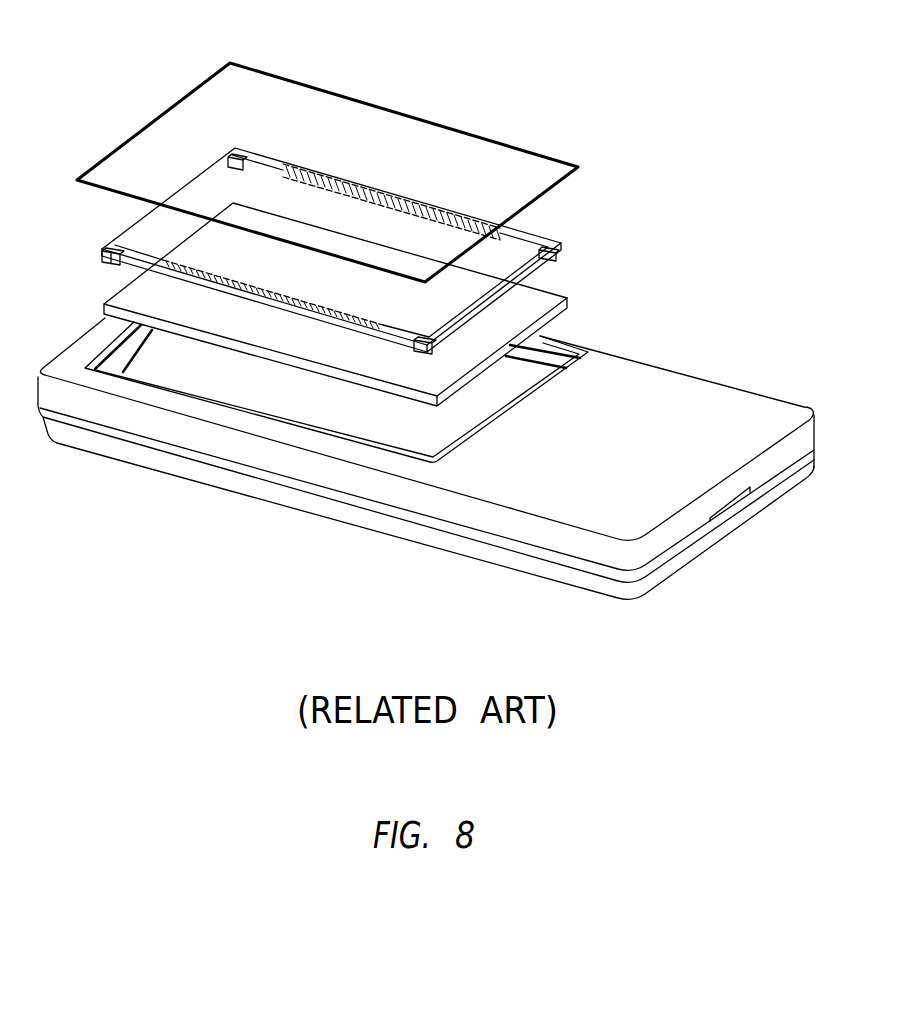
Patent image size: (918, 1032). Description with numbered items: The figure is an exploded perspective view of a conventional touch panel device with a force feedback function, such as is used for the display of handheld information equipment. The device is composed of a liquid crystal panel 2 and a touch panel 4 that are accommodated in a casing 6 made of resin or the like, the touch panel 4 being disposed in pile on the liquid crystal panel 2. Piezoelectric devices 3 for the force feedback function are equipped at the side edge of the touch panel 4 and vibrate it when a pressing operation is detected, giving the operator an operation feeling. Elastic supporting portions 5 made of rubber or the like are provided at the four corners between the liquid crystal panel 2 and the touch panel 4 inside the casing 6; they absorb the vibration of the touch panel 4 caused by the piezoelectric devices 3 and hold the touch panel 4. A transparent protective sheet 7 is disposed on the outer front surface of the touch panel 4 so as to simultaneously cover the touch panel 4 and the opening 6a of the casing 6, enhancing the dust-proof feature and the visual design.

The liquid crystal panel 2 is at (540, 297).
The piezoelectric devices 3 is at (448, 207).
The touch panel 4 is at (530, 237).
The elastic supporting portions 5 is at (103, 262).
The casing 6 is at (658, 385).
The opening 6a is at (275, 400).
The protective sheet 7 is at (292, 105).